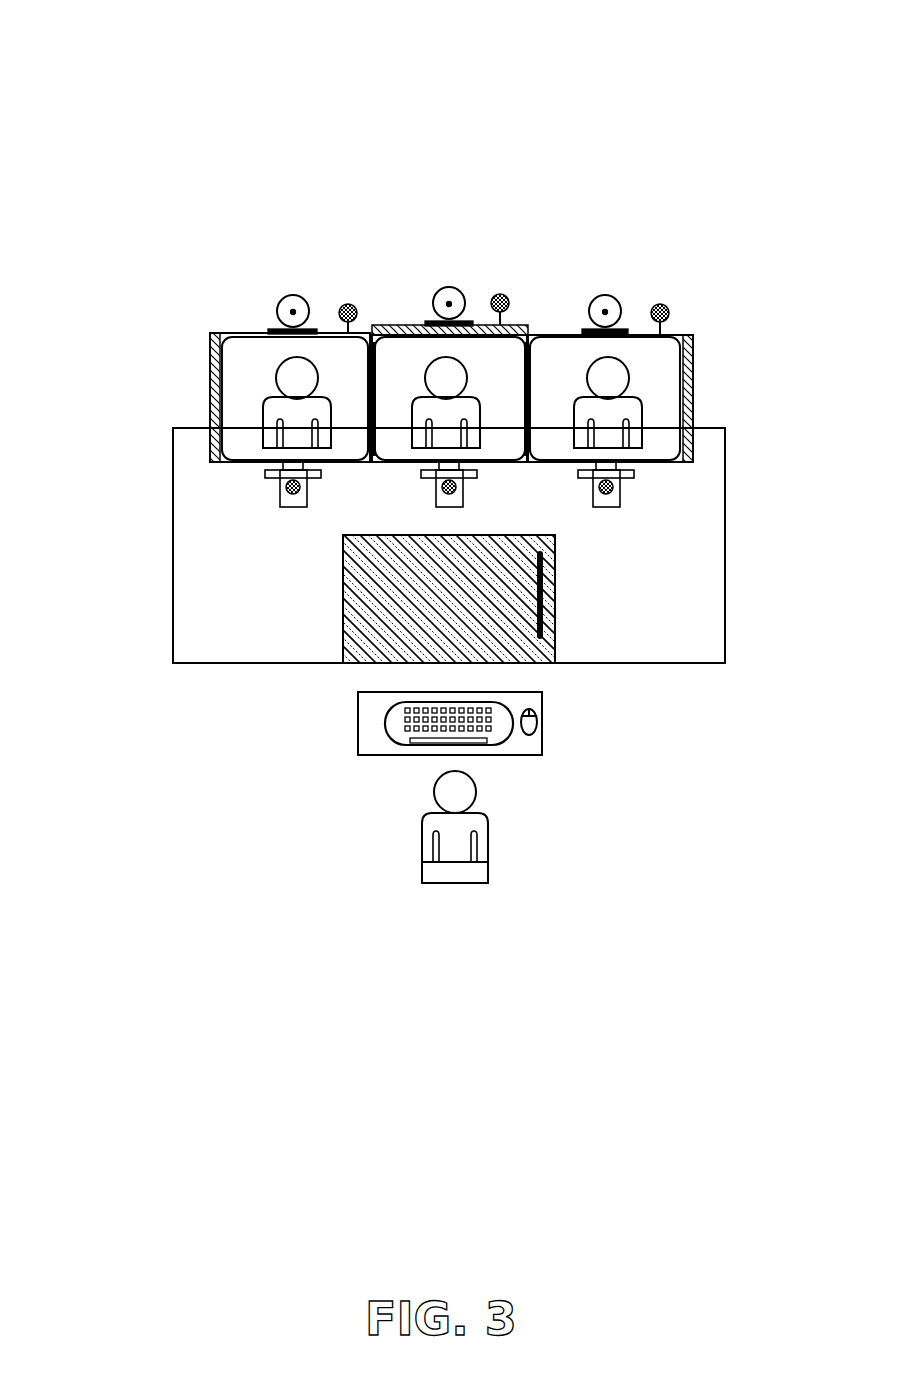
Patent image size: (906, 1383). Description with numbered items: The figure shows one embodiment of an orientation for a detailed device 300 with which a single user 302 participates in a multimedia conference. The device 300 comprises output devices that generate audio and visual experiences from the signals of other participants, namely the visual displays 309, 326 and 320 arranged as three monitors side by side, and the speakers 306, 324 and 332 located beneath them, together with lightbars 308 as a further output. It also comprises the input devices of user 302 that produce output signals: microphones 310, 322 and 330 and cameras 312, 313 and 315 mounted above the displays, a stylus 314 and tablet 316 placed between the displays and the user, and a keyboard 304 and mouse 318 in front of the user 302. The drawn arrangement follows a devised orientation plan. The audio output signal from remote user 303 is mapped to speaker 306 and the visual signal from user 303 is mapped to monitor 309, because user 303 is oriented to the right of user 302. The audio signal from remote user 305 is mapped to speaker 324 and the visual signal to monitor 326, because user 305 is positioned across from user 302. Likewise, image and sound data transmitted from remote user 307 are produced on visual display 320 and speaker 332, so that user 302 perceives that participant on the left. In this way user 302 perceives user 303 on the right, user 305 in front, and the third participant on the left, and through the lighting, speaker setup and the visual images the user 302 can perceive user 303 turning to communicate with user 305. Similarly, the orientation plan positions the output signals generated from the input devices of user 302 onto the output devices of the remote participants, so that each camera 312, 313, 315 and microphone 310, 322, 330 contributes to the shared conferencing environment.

The device 300 is at (149, 57).
The user 302 is at (490, 818).
The user 303 is at (608, 403).
The keyboard 304 is at (508, 708).
The user 305 is at (441, 393).
The speaker 306 is at (620, 497).
The remote user 307 is at (290, 395).
The lightbar 308 is at (693, 371).
The visual display 309 is at (668, 416).
The microphone 310 is at (667, 304).
The camera 312 is at (594, 297).
The camera 313 is at (437, 291).
The stylus 314 is at (545, 593).
The camera 315 is at (280, 297).
The tablet 316 is at (357, 635).
The mouse 318 is at (539, 727).
The visual display 320 is at (248, 395).
The microphone 322 is at (505, 295).
The speaker 324 is at (465, 490).
The visual display 326 is at (394, 443).
The microphone 330 is at (355, 305).
The speaker 332 is at (280, 507).